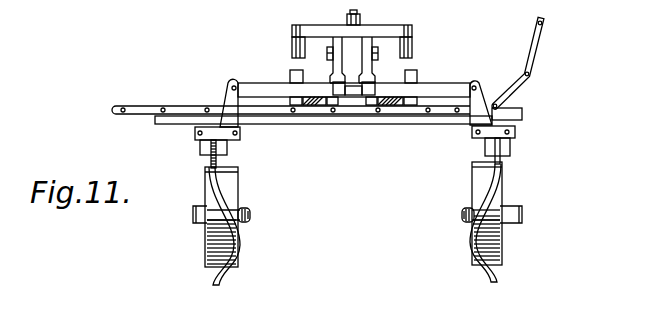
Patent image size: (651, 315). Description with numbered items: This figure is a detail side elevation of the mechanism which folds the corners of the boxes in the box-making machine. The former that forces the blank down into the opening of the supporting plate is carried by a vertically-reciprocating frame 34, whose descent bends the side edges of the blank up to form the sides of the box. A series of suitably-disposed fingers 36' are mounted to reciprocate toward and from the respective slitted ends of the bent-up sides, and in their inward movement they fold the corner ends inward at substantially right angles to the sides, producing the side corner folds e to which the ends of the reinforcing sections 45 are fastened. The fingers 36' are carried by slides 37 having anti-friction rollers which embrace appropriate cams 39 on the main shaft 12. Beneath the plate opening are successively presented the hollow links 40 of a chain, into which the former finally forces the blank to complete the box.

The vertically-reciprocating frame 34 is at (322, 33).
The fingers 36' is at (354, 79).
The slides 37 is at (228, 100).
The hollow links 40 is at (273, 125).
The side corner folds e is at (342, 95).
The reinforcing sections 45 is at (353, 95).
The cams 39 is at (212, 279).
The main shaft 12 is at (195, 220).